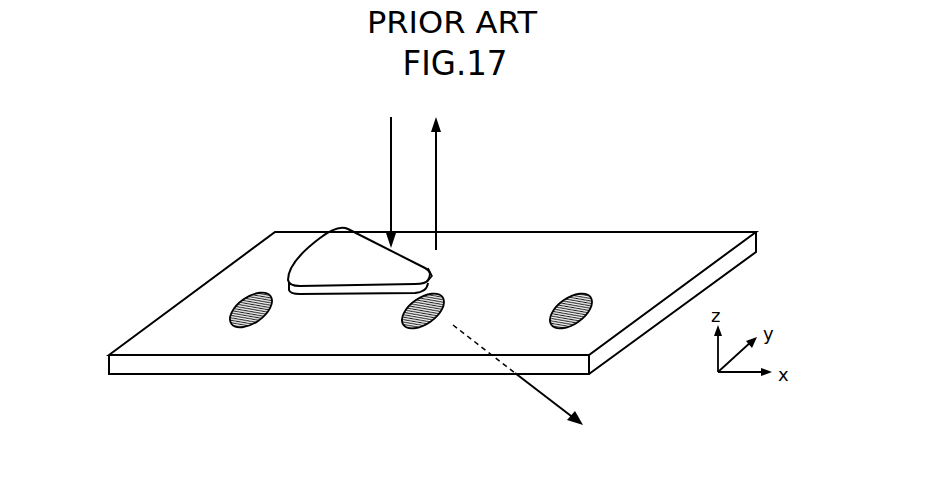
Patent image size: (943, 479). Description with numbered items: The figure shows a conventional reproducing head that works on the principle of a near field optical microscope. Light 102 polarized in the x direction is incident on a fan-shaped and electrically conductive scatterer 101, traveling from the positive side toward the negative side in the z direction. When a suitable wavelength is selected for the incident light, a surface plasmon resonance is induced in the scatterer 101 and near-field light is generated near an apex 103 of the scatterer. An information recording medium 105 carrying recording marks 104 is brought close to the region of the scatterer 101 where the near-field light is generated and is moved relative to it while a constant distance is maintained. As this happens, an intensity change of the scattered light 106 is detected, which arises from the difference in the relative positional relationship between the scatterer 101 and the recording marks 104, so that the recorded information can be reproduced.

The scatterer 101 is at (292, 274).
The light 102 is at (389, 173).
The apex 103 is at (436, 273).
The recording marks 104 is at (272, 308).
The information recording medium 105 is at (177, 307).
The scattered light 106 is at (438, 175).